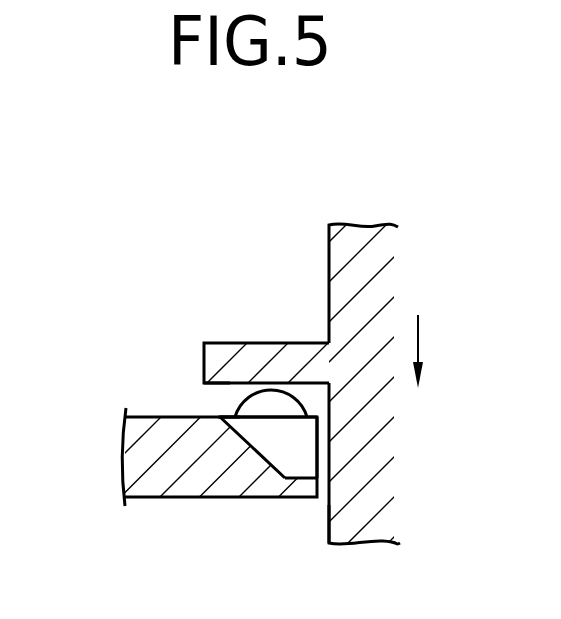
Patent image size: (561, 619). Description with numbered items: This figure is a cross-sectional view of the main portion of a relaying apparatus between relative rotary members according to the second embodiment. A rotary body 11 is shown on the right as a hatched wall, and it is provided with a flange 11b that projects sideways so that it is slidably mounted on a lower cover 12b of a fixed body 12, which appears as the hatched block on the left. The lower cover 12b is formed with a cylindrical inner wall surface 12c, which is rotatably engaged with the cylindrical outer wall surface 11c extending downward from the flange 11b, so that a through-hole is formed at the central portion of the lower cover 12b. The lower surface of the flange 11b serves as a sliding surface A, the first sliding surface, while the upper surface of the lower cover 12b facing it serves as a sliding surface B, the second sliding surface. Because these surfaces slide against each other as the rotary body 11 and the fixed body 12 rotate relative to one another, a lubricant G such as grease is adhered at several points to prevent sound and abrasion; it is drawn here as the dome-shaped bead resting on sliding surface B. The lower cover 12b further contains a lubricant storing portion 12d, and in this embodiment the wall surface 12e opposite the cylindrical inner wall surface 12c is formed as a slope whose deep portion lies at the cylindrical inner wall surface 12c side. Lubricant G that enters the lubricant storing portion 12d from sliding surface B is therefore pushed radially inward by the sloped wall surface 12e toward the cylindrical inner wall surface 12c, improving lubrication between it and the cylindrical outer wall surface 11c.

The rotary body 11 is at (367, 214).
The flange 11b is at (216, 342).
The cylindrical outer wall surface 11c is at (331, 517).
The fixed body 12 is at (108, 472).
The lower cover 12b is at (191, 488).
The cylindrical inner wall surface 12c is at (330, 414).
The lubricant storing portion 12d is at (298, 438).
The wall surface 12e is at (267, 456).
The sliding surface A is at (215, 390).
The sliding surface B is at (218, 414).
The lubricant G is at (292, 393).